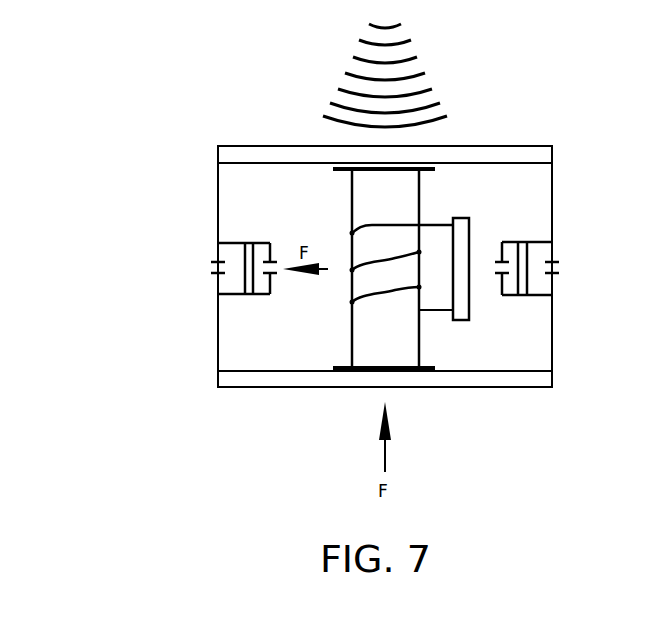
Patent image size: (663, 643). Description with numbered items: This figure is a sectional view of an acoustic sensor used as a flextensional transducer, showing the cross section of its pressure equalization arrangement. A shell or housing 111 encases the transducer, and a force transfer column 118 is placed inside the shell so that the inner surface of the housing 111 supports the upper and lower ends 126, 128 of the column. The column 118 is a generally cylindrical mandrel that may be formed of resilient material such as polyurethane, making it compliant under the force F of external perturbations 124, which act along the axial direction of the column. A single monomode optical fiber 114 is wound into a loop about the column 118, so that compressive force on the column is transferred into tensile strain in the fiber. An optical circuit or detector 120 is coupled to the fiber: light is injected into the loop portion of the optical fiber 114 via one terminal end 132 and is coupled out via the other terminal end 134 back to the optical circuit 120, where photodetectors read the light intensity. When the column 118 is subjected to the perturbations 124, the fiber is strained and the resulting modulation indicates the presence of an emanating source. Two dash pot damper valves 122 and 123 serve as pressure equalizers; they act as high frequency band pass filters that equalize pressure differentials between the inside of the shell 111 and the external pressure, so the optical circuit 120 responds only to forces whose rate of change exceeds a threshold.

The shell or housing 111 is at (535, 158).
The single monomode optical fiber 114 is at (383, 297).
The force transfer column 118 is at (402, 202).
The optical circuit or detector 120 is at (463, 297).
The pressure equalizer 122 is at (228, 250).
The dash pot damper valve 123 is at (545, 250).
The external perturbations 124 is at (456, 82).
The upper end of column 126 is at (358, 168).
The lower end of column 128 is at (358, 372).
The terminal end of optical fiber 132 is at (453, 225).
The other terminal end of optical fiber 134 is at (452, 310).